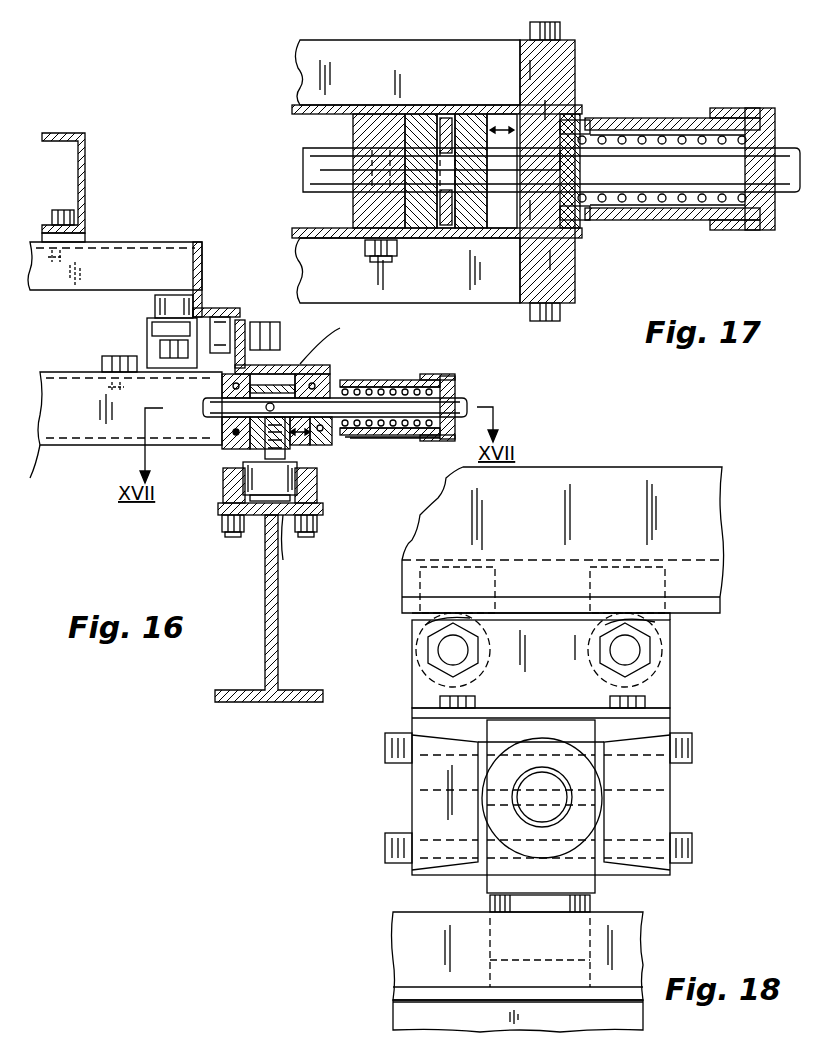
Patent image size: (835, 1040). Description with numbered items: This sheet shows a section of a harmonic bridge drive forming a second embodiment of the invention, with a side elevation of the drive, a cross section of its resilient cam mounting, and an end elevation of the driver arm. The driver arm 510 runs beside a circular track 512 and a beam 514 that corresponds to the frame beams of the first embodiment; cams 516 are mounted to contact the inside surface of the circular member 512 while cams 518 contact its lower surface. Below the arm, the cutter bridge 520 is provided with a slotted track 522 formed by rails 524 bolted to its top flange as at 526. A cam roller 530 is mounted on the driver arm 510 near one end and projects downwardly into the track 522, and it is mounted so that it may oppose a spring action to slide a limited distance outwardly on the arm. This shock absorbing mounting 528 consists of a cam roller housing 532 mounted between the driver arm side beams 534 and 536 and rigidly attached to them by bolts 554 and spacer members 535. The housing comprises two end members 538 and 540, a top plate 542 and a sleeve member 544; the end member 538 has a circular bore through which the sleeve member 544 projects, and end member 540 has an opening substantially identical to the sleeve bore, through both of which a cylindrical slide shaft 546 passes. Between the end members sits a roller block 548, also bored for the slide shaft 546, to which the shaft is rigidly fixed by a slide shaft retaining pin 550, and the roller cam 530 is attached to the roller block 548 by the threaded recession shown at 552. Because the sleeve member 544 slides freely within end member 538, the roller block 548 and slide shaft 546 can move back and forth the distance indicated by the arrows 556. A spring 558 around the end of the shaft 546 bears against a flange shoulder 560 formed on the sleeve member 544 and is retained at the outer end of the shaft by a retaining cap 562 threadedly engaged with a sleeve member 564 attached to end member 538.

In FIG. 16, the driver arm 510 is at (40, 472).
In FIG. 16, the circular track 512 is at (202, 258).
In FIG. 18, the circular track 512 is at (722, 515).
In FIG. 16, the beam 514 is at (85, 172).
In FIG. 16, the cams 516 is at (155, 308).
In FIG. 18, the cams 516 is at (495, 575).
In FIG. 16, the cams 518 is at (218, 317).
In FIG. 18, the cams 518 is at (432, 630).
In FIG. 16, the cutter bridge 520 is at (280, 630).
In FIG. 18, the cutter bridge 520 is at (410, 1014).
In FIG. 16, the slotted track 522 is at (303, 542).
In FIG. 16, the rails 524 is at (223, 503).
In FIG. 18, the rails 524 is at (410, 950).
In FIG. 16, the bolts 526 is at (230, 537).
In FIG. 16, the shock absorbing mounting 528 is at (360, 372).
In FIG. 16, the cam roller 530 is at (317, 478).
In FIG. 18, the cam roller 530 is at (590, 900).
In FIG. 16, the cam roller housing 532 is at (312, 364).
In FIG. 18, the cam roller housing 532 is at (505, 720).
In FIG. 17, the driver arm side beam 534 is at (413, 105).
In FIG. 18, the driver arm side beam 534 is at (655, 730).
In FIG. 17, the spacer members 535 is at (565, 62).
In FIG. 18, the spacer members 535 is at (420, 792).
In FIG. 16, the driver arm side beam 536 is at (75, 425).
In FIG. 17, the driver arm side beam 536 is at (415, 240).
In FIG. 18, the driver arm side beam 536 is at (412, 725).
In FIG. 17, the end member 538 is at (572, 112).
In FIG. 18, the end member 538 is at (583, 722).
In FIG. 16, the end member 540 is at (235, 452).
In FIG. 17, the end member 540 is at (356, 128).
In FIG. 16, the top plate 542 is at (298, 348).
In FIG. 16, the sleeve member 544 is at (339, 339).
In FIG. 17, the sleeve member 544 is at (572, 230).
In FIG. 16, the slide shaft 546 is at (467, 405).
In FIG. 17, the slide shaft 546 is at (785, 195).
In FIG. 18, the slide shaft 546 is at (560, 785).
In FIG. 16, the roller block 548 is at (297, 445).
In FIG. 17, the roller block 548 is at (473, 112).
In FIG. 16, the slide shaft retaining pin 550 is at (230, 393).
In FIG. 17, the slide shaft retaining pin 550 is at (446, 105).
In FIG. 16, the threaded recession 552 is at (265, 445).
In FIG. 16, the bolts 554 is at (222, 430).
In FIG. 17, the bolts 554 is at (560, 30).
In FIG. 18, the bolts 554 is at (692, 755).
In FIG. 16, the arrows 556 is at (300, 436).
In FIG. 17, the arrows 556 is at (504, 124).
In FIG. 16, the spring 558 is at (410, 380).
In FIG. 17, the spring 558 is at (690, 135).
In FIG. 16, the flange shoulder 560 is at (360, 440).
In FIG. 17, the flange shoulder 560 is at (590, 127).
In FIG. 16, the retaining cap 562 is at (455, 382).
In FIG. 17, the retaining cap 562 is at (775, 110).
In FIG. 18, the retaining cap 562 is at (582, 820).
In FIG. 16, the sleeve member 564 is at (405, 435).
In FIG. 17, the sleeve member 564 is at (662, 222).